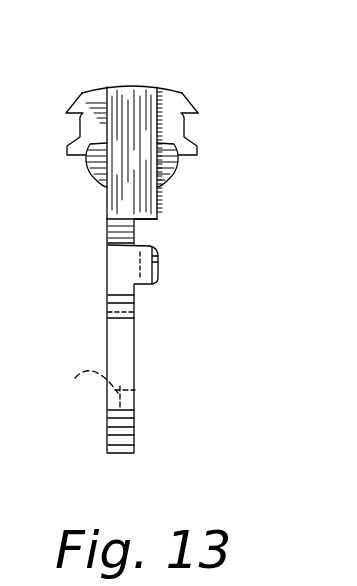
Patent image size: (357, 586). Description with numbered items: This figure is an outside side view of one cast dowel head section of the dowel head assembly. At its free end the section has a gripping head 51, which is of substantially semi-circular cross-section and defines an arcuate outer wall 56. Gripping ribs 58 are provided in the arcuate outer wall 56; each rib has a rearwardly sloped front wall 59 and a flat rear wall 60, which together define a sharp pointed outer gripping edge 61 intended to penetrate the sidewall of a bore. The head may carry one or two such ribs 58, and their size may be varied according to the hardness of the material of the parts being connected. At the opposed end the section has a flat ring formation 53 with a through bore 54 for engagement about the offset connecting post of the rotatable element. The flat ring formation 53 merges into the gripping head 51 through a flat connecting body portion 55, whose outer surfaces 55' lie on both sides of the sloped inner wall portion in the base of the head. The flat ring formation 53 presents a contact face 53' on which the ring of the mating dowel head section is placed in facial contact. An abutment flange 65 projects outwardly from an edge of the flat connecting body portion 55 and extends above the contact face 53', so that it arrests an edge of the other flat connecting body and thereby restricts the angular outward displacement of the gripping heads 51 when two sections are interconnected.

The gripping head 51 is at (230, 123).
The flat ring formation 53 is at (171, 421).
The contact face 53' is at (179, 301).
The through bore 54 is at (81, 387).
The flat connecting body portion 55 is at (129, 232).
The outer surfaces of the body portion 55' is at (80, 210).
The arcuate outer wall 56 is at (94, 113).
The gripping ribs 58 is at (73, 144).
The rearwardly sloped front wall 59 is at (186, 97).
The flat rear wall 60 is at (195, 148).
The sharp pointed outer gripping edge 61 is at (198, 112).
The abutment flange 65 is at (154, 263).